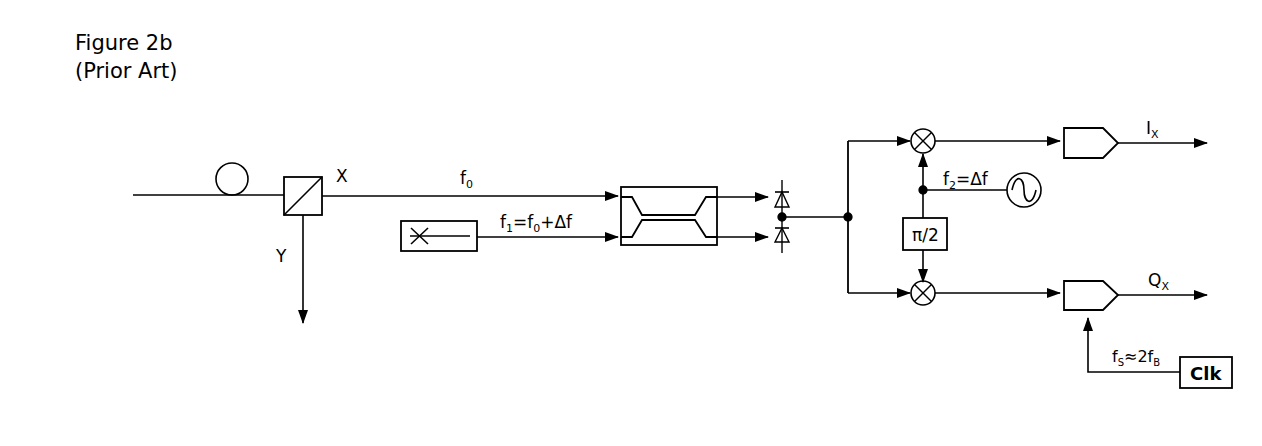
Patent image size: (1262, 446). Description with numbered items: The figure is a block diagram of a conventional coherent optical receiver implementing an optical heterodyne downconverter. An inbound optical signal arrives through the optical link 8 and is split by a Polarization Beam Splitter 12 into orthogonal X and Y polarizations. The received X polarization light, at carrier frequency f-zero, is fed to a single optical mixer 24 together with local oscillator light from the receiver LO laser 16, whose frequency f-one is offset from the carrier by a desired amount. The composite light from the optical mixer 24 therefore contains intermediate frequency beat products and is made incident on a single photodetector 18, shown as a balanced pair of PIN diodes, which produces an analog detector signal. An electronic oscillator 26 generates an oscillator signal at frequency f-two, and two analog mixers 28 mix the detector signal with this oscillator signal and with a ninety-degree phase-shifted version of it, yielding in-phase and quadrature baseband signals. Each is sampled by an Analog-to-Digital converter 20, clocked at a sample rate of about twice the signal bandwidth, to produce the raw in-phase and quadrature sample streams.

The optical link 8 is at (207, 196).
The Polarization Beam Splitter 12 is at (302, 177).
The receiver LO laser 16 is at (409, 251).
The photodetector 18 is at (782, 160).
The Analog-to-Digital converter 20 is at (1075, 128).
The optical mixer 24 is at (657, 245).
The electronic oscillator 26 is at (1041, 191).
The analog mixer 28 is at (927, 129).